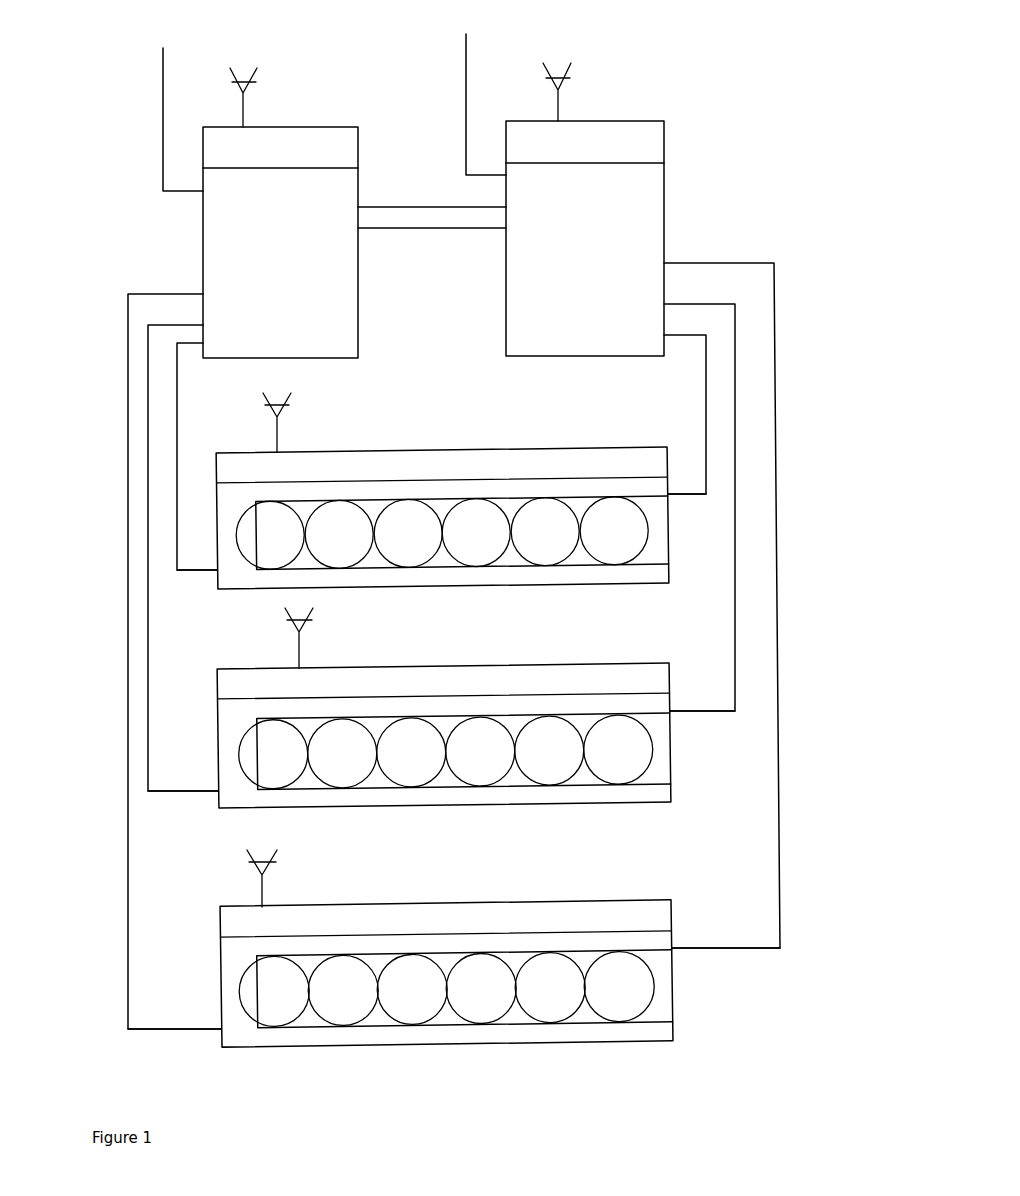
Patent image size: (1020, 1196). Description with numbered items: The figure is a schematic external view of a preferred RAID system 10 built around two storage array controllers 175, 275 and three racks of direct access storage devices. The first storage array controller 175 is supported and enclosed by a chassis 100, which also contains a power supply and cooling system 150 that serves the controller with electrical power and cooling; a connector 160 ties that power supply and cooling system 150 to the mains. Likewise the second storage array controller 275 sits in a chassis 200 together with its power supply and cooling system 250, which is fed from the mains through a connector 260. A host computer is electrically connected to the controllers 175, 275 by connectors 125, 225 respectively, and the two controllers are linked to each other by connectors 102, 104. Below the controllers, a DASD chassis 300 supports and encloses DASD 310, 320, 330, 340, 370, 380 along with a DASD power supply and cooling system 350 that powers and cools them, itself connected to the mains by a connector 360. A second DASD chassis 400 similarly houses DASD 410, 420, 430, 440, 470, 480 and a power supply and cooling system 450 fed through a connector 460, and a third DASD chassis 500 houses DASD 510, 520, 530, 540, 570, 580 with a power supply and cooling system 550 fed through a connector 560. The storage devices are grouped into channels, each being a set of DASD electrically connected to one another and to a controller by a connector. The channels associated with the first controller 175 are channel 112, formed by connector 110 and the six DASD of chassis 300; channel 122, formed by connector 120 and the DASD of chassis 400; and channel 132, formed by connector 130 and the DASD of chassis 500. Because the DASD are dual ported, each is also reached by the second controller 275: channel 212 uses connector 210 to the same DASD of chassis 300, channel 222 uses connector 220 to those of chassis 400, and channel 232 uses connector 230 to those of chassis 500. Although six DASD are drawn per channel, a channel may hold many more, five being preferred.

The RAID system 10 is at (842, 830).
The chassis 100 is at (203, 250).
The connector 102 is at (417, 202).
The connector 104 is at (437, 228).
The connector 110 is at (177, 428).
The channel 112 is at (197, 573).
The connector 120 is at (148, 572).
The channel 122 is at (173, 793).
The connector 125 is at (163, 106).
The connector 130 is at (128, 682).
The channel 132 is at (163, 1032).
The power supply and cooling system 150 is at (340, 144).
The connector 160 is at (243, 106).
The storage array controller 175 is at (340, 310).
The chassis 200 is at (667, 200).
The connector 210 is at (703, 378).
The channel 212 is at (687, 498).
The connector 220 is at (736, 445).
The channel 222 is at (708, 713).
The connector 225 is at (466, 82).
The connector 230 is at (779, 675).
The channel 232 is at (733, 952).
The power supply and cooling system 250 is at (632, 130).
The connector 260 is at (553, 101).
The storage array controller 275 is at (527, 305).
The DASD chassis 300 is at (502, 588).
The DASD 310 is at (264, 542).
The DASD 320 is at (333, 542).
The DASD 330 is at (402, 542).
The DASD 340 is at (472, 538).
The DASD power supply and cooling system 350 is at (490, 460).
The connector 360 is at (275, 432).
The DASD 370 is at (540, 538).
The DASD 380 is at (619, 538).
The DASD chassis 400 is at (445, 806).
The DASD 410 is at (277, 760).
The DASD 420 is at (346, 760).
The DASD 430 is at (414, 760).
The DASD 440 is at (483, 757).
The DASD power supply and cooling system 450 is at (476, 690).
The connector 460 is at (298, 638).
The DASD 470 is at (553, 757).
The DASD 480 is at (621, 765).
The DASD chassis 500 is at (438, 1047).
The DASD 510 is at (270, 1007).
The DASD 520 is at (338, 1007).
The DASD 530 is at (407, 1007).
The DASD 540 is at (477, 1005).
The DASD power supply and cooling system 550 is at (505, 922).
The connector 560 is at (257, 887).
The DASD 570 is at (545, 1005).
The DASD 580 is at (613, 1005).